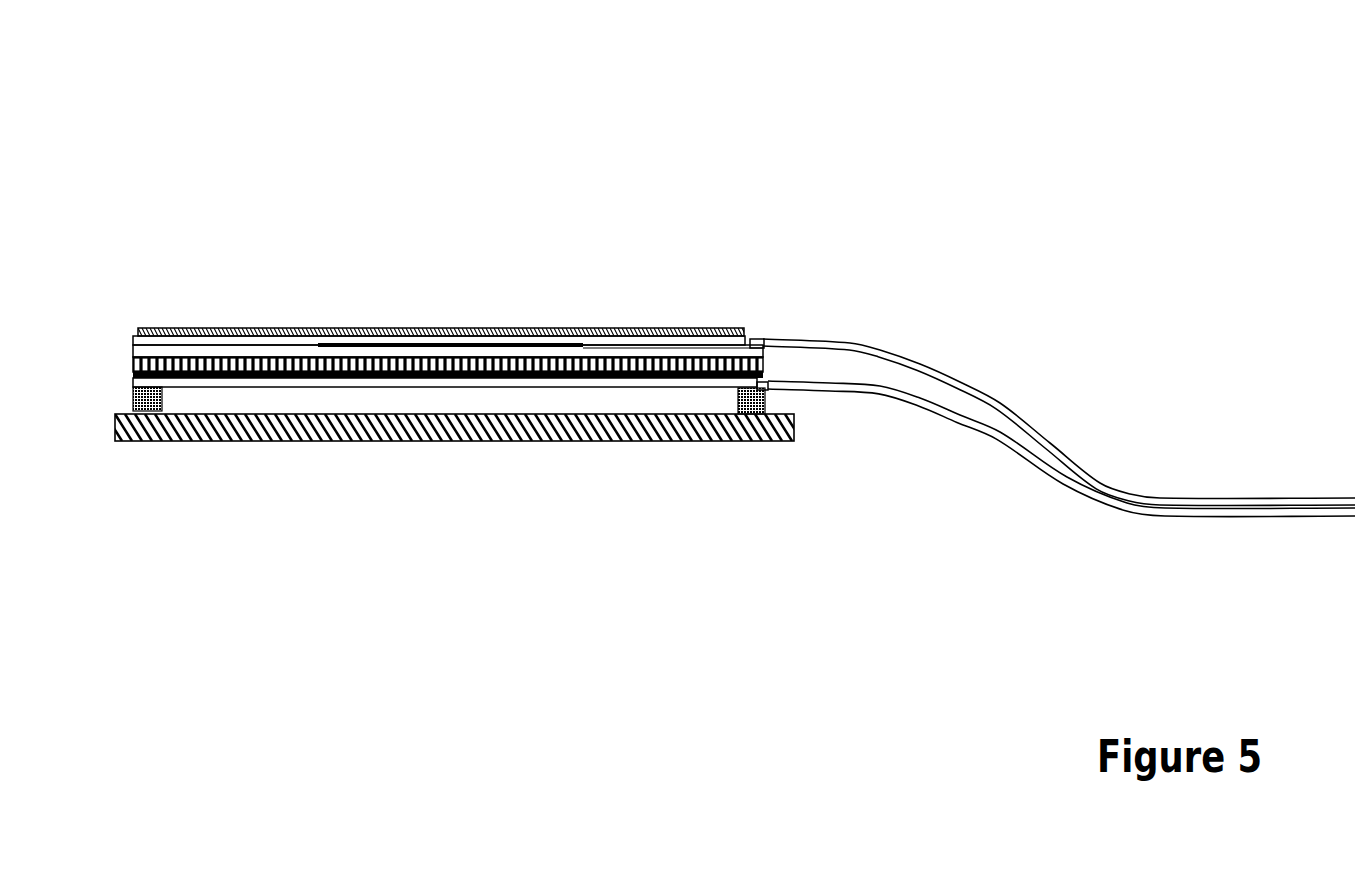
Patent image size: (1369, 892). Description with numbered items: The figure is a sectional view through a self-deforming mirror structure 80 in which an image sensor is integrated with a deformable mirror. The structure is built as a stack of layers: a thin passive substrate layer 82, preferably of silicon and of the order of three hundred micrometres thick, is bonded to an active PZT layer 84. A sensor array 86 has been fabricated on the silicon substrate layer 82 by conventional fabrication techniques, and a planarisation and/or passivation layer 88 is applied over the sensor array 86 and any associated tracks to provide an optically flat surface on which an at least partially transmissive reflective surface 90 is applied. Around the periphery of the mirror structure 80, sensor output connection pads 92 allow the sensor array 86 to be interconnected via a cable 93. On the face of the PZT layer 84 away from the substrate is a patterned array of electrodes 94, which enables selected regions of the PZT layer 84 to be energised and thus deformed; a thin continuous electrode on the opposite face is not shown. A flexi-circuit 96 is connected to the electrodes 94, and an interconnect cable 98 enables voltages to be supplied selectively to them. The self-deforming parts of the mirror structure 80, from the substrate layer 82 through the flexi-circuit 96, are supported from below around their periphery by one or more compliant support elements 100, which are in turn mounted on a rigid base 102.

The self-deforming mirror structure 80 is at (652, 195).
The passive substrate layer 82 is at (124, 349).
The active PZT layer 84 is at (765, 367).
The sensor array 86 is at (583, 346).
The planarisation and/or passivation layer 88 is at (135, 339).
The partially transmissive reflective surface 90 is at (276, 327).
The sensor output connection pads 92 is at (778, 349).
The cable 93 is at (896, 352).
The patterned array of electrodes 94 is at (133, 378).
The flexi-circuit 96 is at (613, 383).
The interconnect cable 98 is at (909, 399).
The compliant support elements 100 is at (163, 395).
The rigid base 102 is at (440, 444).